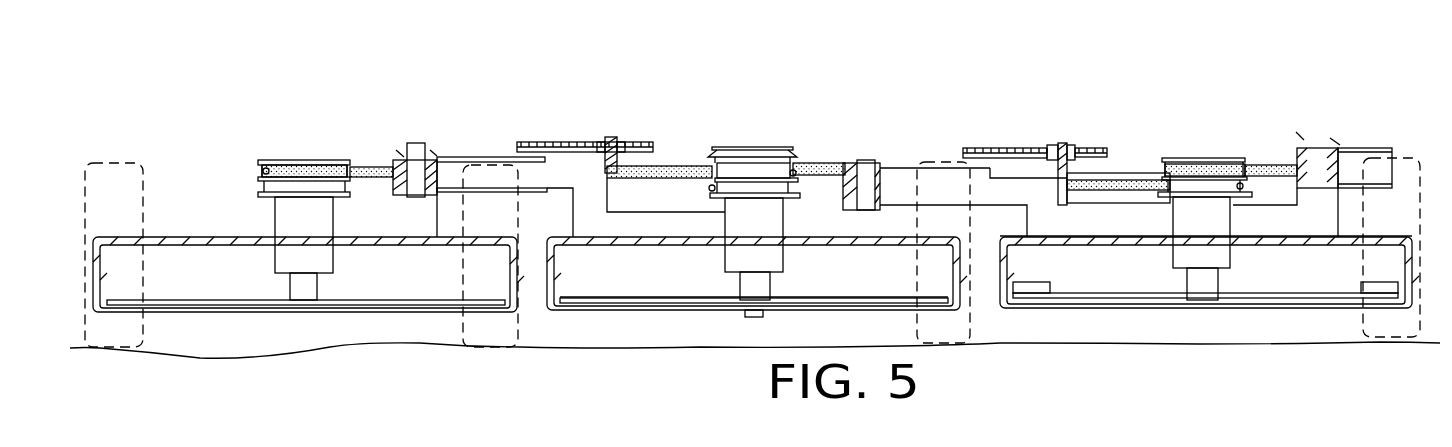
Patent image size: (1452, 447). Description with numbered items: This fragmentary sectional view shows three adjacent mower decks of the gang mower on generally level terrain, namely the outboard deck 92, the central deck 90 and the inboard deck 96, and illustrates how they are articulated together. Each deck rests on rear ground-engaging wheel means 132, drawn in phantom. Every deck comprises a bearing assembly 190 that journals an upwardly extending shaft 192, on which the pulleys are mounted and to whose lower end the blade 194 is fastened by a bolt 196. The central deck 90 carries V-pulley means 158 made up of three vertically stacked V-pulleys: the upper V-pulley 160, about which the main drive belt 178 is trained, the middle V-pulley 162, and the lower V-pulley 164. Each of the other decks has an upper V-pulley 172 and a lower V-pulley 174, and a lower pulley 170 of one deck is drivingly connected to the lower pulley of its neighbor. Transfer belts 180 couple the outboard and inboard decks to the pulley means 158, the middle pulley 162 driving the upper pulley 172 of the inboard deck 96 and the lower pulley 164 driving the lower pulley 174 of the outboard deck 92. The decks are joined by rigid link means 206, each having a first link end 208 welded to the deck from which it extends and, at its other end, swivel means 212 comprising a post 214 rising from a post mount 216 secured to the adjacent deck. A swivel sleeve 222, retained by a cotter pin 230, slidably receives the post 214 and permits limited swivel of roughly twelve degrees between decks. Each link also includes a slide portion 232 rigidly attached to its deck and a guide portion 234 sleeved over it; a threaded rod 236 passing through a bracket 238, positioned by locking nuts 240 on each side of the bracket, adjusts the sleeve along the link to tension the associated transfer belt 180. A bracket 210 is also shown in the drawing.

The central deck 90 is at (663, 287).
The outboard deck 92 is at (1133, 274).
The inboard deck 96 is at (157, 237).
The wheel means 132 is at (124, 160).
The V-pulley means 158 is at (777, 126).
The upper V-pulley 160 is at (768, 150).
The middle V-pulley 162 is at (737, 172).
The lower V-pulley 164 is at (708, 190).
The lower pulley 170 is at (333, 158).
The upper V-pulley 172 is at (262, 160).
The lower V-pulley 174 is at (260, 200).
The main drive belt 178 is at (788, 157).
The transfer belt 180 is at (393, 162).
The bearing assembly 190 is at (320, 262).
The shaft 192 is at (298, 290).
The blade 194 is at (860, 298).
The bolt 196 is at (763, 319).
The rigid link means 206 is at (811, 101).
The first link end 208 is at (1077, 222).
The bracket 210 is at (447, 158).
The swivel means 212 is at (417, 131).
The post 214 is at (874, 162).
The post mount 216 is at (401, 223).
The swivel sleeve 222 is at (366, 172).
The cotter pin 230 is at (847, 163).
The slide portion 232 is at (535, 177).
The guide portion 234 is at (476, 155).
The threaded rod 236 is at (575, 141).
The bracket 238 is at (613, 137).
The locking nut 240 is at (600, 140).